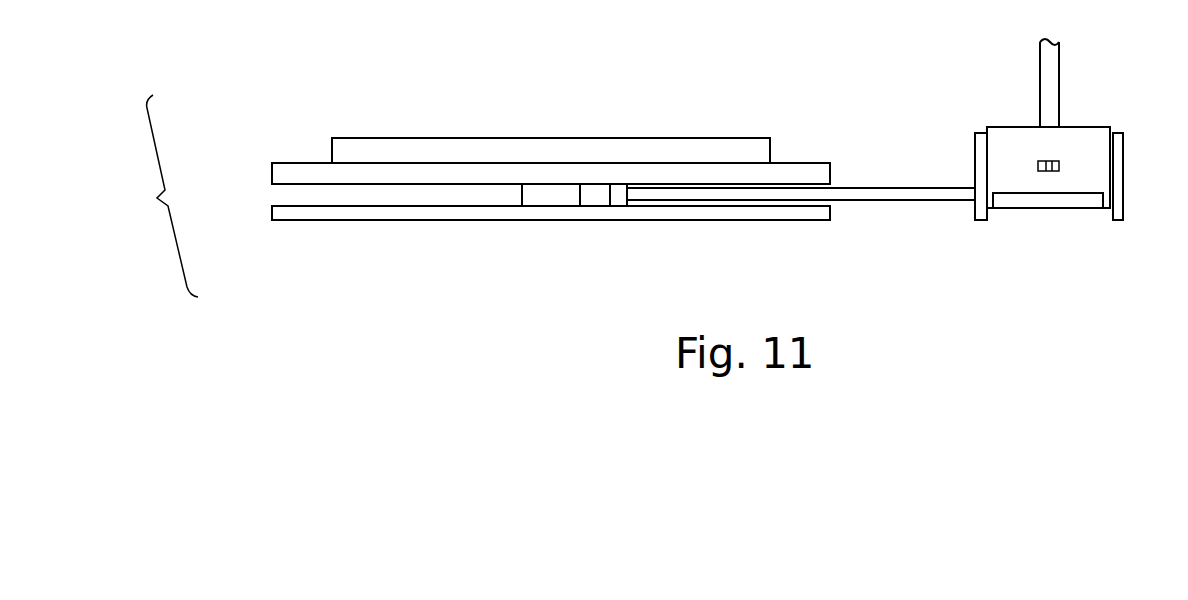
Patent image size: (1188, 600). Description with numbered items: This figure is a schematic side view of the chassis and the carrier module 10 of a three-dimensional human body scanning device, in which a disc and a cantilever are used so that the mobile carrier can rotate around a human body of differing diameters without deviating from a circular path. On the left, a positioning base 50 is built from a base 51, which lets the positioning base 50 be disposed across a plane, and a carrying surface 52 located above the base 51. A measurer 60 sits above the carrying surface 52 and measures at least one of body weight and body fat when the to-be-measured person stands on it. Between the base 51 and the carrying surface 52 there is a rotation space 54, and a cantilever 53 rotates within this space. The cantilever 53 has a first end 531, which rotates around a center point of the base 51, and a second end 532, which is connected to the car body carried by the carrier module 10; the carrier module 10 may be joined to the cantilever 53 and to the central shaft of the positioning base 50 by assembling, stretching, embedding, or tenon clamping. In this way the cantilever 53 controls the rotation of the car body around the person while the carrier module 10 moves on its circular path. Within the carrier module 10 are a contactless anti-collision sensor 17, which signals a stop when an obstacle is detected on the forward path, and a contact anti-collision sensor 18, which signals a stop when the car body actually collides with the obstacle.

The carrier module 10 is at (1103, 112).
The contactless anti-collision sensor 17 is at (1060, 168).
The contact anti-collision sensor 18 is at (1053, 202).
The positioning base 50 is at (157, 196).
The base 51 is at (322, 213).
The carrying surface 52 is at (310, 170).
The cantilever 53 is at (882, 195).
The first end 531 is at (640, 195).
The second end 532 is at (970, 195).
The rotation space 54 is at (292, 197).
The measurer 60 is at (395, 147).